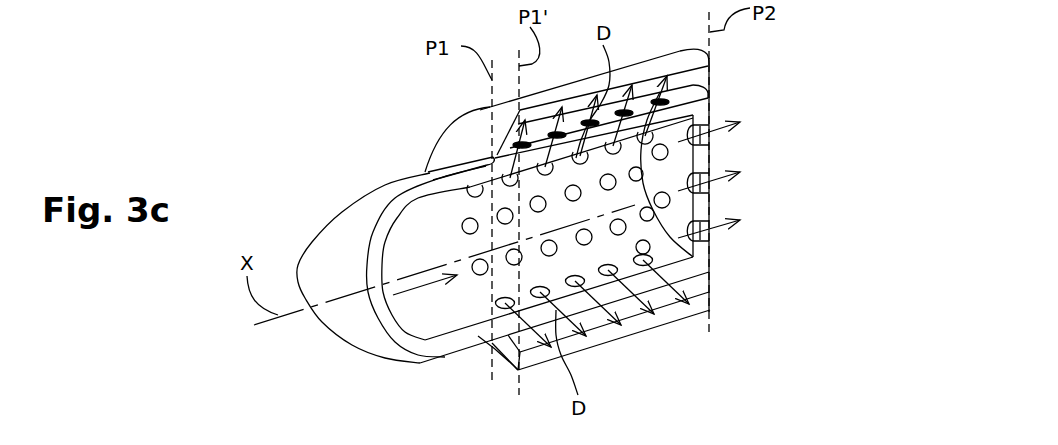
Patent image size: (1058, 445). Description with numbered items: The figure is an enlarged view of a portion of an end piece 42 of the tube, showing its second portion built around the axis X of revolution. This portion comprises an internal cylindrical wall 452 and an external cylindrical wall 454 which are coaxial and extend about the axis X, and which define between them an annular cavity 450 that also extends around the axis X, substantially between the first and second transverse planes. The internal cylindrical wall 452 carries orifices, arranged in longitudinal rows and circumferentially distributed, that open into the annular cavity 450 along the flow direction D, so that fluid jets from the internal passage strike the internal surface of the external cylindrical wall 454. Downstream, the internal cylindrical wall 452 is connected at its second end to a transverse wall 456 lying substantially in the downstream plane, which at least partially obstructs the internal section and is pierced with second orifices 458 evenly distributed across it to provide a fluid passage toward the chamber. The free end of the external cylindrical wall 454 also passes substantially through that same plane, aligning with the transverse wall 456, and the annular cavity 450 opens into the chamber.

The end piece 42 is at (766, 57).
The annular cavity 450 is at (600, 322).
The internal cylindrical wall 452 is at (483, 328).
The external cylindrical wall 454 is at (648, 322).
The transverse wall 456 is at (705, 210).
The second orifices 458 is at (710, 157).